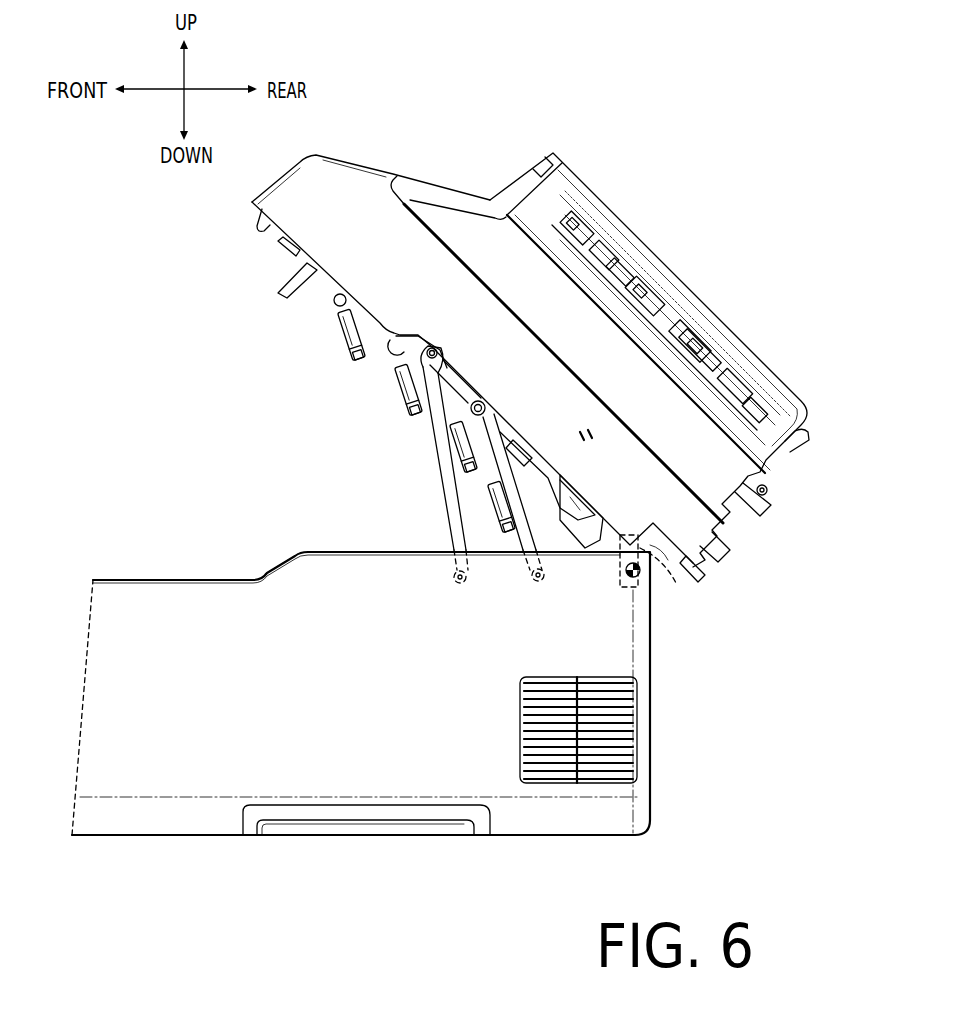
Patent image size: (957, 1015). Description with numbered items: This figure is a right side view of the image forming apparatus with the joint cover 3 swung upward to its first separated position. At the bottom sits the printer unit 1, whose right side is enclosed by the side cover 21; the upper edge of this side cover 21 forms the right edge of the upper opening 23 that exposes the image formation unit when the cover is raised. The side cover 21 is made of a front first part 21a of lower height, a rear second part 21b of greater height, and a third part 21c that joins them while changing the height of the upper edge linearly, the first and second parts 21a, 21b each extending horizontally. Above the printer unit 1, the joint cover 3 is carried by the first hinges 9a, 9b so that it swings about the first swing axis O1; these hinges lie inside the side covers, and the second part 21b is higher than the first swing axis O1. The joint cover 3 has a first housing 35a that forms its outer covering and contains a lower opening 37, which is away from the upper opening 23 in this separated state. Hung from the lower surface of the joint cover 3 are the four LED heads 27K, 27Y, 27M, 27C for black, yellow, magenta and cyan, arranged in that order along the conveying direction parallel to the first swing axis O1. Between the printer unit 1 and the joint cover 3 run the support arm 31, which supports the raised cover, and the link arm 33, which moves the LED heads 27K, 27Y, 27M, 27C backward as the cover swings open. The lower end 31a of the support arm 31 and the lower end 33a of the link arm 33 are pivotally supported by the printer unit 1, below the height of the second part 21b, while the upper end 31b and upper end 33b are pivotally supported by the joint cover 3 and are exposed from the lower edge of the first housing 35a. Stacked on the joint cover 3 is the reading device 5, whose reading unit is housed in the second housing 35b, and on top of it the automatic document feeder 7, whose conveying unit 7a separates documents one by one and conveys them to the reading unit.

The printer unit 1 is at (112, 668).
The joint cover 3 is at (318, 176).
The reading device 5 is at (456, 194).
The automatic document feeder 7 is at (531, 164).
The conveying unit 7a is at (673, 292).
The first hinge 9a is at (664, 566).
The first hinge 9b is at (686, 580).
The side cover 21 is at (192, 783).
The first part 21a is at (170, 567).
The second part 21b is at (367, 545).
The third part 21c is at (270, 560).
The upper opening 23 is at (130, 578).
The LED head 27K is at (352, 350).
The LED head 27Y is at (408, 408).
The LED head 27M is at (470, 443).
The LED head 27C is at (545, 487).
The support arm 31 is at (440, 477).
The lower end of support arm 31a is at (460, 586).
The upper end of support arm 31b is at (433, 355).
The link arm 33 is at (560, 517).
The lower end of link arm 33a is at (538, 584).
The upper end of link arm 33b is at (481, 410).
The first housing 35a is at (289, 198).
The second housing 35b is at (447, 225).
The lower opening 37 is at (275, 233).
The first swing axis O1 is at (645, 572).